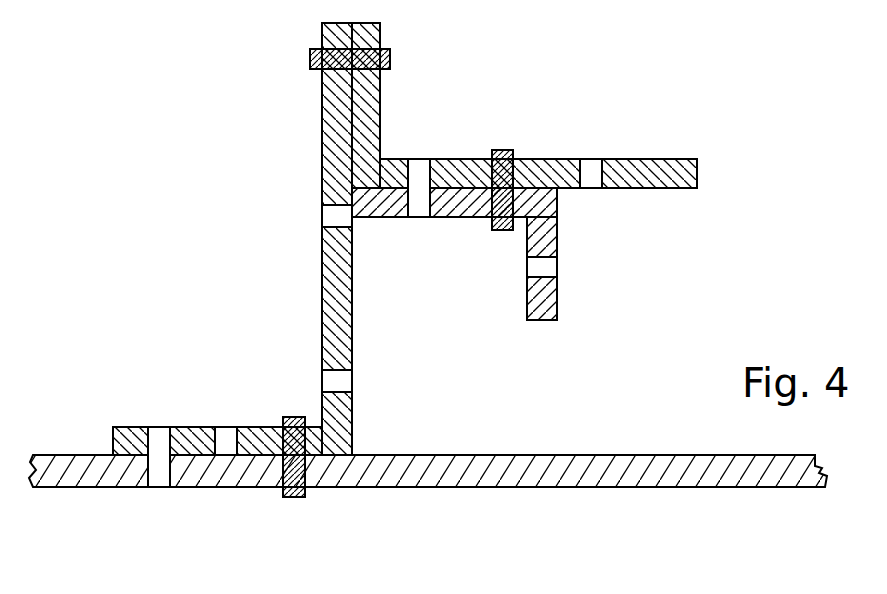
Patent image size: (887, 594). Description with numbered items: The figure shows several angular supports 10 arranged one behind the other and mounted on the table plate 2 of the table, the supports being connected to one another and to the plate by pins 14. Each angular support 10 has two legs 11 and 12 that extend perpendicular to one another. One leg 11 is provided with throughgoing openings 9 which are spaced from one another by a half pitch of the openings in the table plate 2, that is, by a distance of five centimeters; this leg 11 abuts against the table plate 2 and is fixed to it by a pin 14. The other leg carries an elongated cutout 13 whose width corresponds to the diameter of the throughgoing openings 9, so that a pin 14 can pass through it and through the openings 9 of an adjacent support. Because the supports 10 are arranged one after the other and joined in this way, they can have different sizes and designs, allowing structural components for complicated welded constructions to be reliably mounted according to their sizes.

The table plate 2 is at (612, 460).
The throughgoing openings 9 is at (418, 163).
The angular support 10 is at (300, 189).
The leg 11 is at (377, 92).
The leg 12 is at (550, 162).
The elongated cutout 13 is at (333, 215).
The pin 14 is at (387, 52).